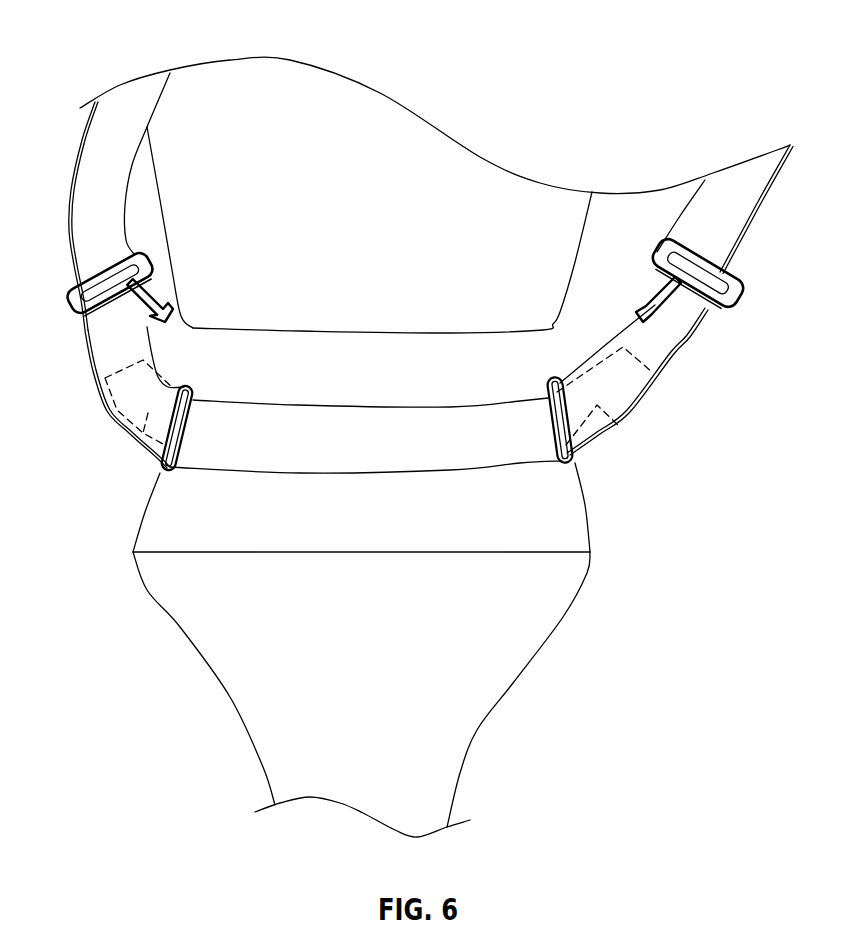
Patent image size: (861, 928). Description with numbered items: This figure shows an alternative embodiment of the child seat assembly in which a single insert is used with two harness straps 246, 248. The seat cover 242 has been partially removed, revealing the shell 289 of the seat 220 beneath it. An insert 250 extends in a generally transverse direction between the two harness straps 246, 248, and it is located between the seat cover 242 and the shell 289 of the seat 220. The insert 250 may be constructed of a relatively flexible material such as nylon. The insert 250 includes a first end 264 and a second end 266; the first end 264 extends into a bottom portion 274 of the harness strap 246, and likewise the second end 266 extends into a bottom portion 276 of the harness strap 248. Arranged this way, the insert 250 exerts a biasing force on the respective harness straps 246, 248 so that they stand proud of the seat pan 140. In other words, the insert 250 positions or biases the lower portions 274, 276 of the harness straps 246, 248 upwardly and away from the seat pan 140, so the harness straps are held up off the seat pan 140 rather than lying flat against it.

The seat 220 is at (674, 59).
The shell 289 is at (484, 200).
The harness strap 246 is at (85, 192).
The harness strap 248 is at (757, 198).
The seat pan 140 is at (488, 366).
The insert 250 is at (347, 453).
The bottom portion 274 is at (103, 352).
The bottom portion 276 is at (653, 347).
The first end 264 is at (137, 440).
The second end 266 is at (627, 427).
The seat cover 242 is at (458, 715).